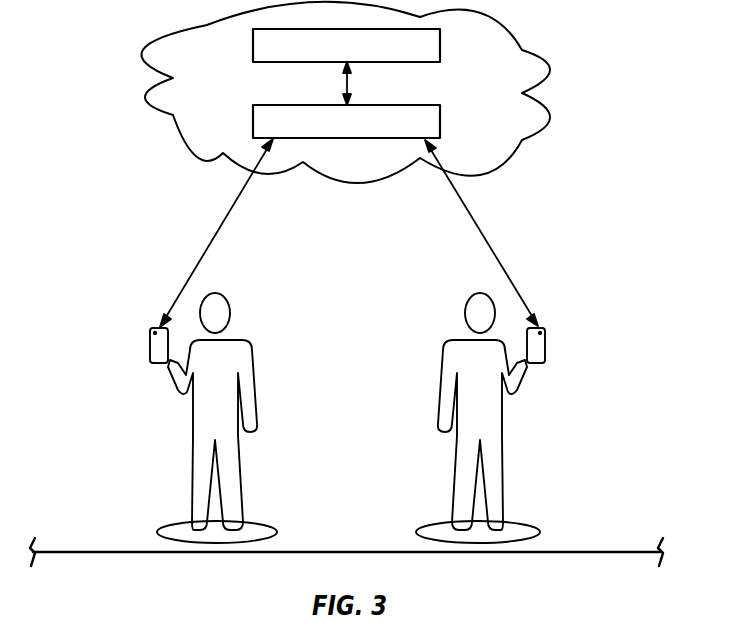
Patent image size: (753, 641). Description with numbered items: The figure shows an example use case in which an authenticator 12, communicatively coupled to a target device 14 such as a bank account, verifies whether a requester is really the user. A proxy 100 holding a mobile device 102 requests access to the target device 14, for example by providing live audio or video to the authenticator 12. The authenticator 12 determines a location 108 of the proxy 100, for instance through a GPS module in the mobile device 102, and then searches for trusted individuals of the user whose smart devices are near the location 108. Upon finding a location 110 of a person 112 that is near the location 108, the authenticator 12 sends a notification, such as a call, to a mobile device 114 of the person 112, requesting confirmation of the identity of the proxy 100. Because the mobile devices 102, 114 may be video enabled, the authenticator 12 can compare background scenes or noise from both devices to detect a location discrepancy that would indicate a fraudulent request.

The target device 14 is at (440, 39).
The authenticator 12 is at (440, 115).
The proxy 100 is at (193, 415).
The mobile device 102 is at (150, 341).
The location 108 is at (158, 530).
The person 112 is at (503, 415).
The mobile device 114 is at (545, 341).
The location 110 is at (538, 530).